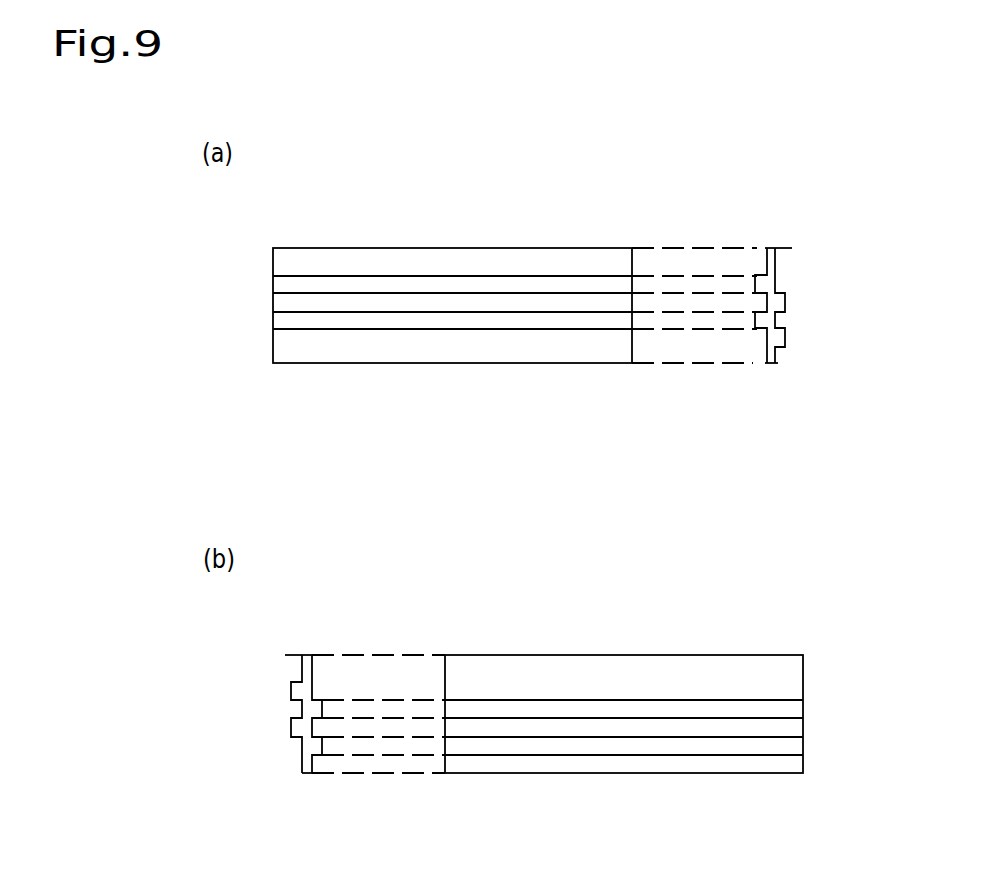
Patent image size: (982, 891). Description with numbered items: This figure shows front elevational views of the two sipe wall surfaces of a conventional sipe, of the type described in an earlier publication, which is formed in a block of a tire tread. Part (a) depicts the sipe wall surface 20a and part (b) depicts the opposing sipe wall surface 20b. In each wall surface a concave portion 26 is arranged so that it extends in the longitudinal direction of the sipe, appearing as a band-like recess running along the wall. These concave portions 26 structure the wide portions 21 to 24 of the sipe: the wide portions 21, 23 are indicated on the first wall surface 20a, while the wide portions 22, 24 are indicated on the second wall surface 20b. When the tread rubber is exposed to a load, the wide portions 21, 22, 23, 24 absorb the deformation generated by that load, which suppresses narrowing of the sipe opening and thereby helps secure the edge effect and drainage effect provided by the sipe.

The sipe wall surface 20a is at (458, 262).
The sipe wall surface 20b is at (593, 677).
The wide portion 21 is at (252, 276).
The wide portion 22 is at (825, 700).
The wide portion 23 is at (252, 311).
The wide portion 24 is at (825, 737).
The concave portion 26 is at (343, 285).